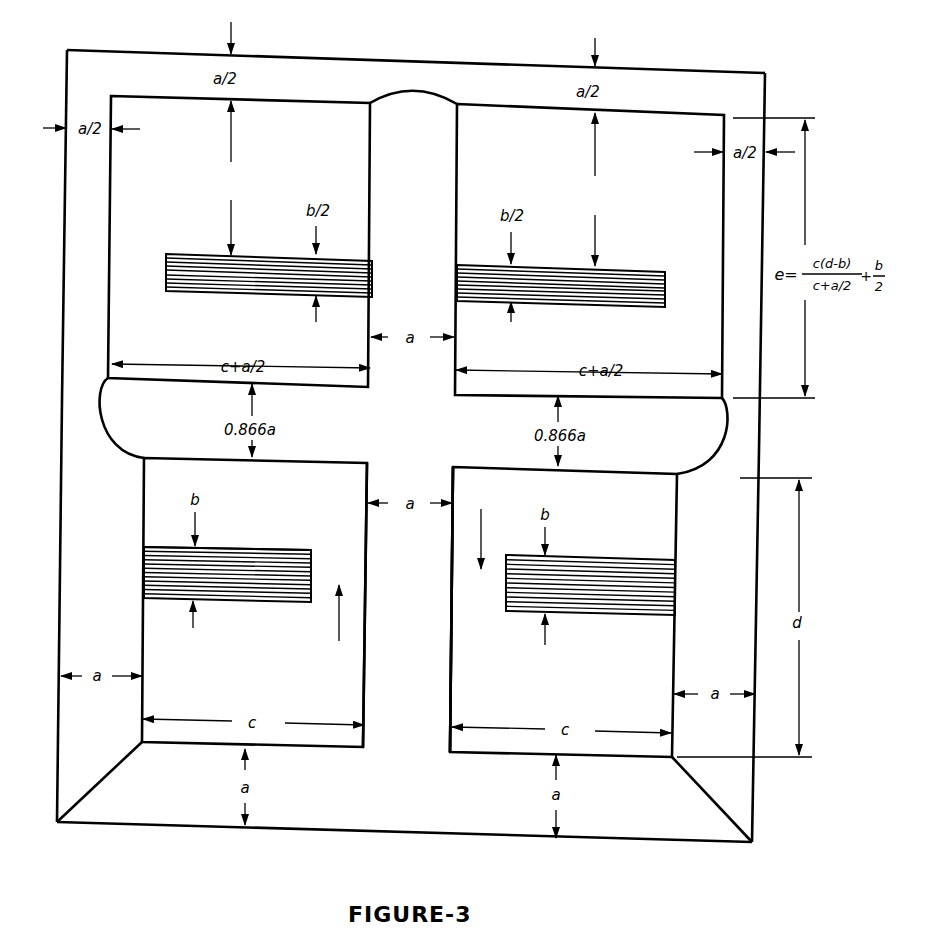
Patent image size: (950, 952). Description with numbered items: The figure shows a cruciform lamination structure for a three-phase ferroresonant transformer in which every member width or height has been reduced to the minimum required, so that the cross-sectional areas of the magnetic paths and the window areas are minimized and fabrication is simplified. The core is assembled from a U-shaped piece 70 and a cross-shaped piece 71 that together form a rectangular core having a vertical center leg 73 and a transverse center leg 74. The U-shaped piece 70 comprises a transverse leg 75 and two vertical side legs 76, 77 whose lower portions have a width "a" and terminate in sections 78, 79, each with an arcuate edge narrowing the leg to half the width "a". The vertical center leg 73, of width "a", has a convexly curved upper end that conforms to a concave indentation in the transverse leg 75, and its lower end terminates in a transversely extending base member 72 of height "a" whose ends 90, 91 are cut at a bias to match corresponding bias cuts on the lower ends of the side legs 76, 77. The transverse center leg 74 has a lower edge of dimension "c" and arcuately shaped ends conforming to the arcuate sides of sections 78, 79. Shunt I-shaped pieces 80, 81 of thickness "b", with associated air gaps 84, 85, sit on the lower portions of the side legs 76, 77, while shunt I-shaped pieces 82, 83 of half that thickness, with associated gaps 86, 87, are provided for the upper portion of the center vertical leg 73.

The U-shaped piece 70 is at (144, 567).
The cross-shaped piece 71 is at (406, 792).
The base member 72 is at (672, 830).
The vertical center leg 73 is at (453, 700).
The transverse center leg 74 is at (597, 475).
The transverse leg 75 is at (420, 61).
The vertical side leg 76 is at (76, 308).
The vertical side leg 77 is at (740, 532).
The narrowed section 78 is at (76, 365).
The narrowed section 79 is at (748, 450).
The shunt I-shaped piece 80 is at (293, 546).
The shunt I-shaped piece 81 is at (646, 557).
The shunt I-shaped piece 82 is at (231, 178).
The shunt I-shaped piece 83 is at (596, 189).
The air gap 84 is at (336, 628).
The air gap 85 is at (484, 528).
The gap 86 is at (164, 271).
The gap 87 is at (668, 288).
The bias-cut end 90 is at (76, 809).
The bias-cut end 91 is at (722, 806).